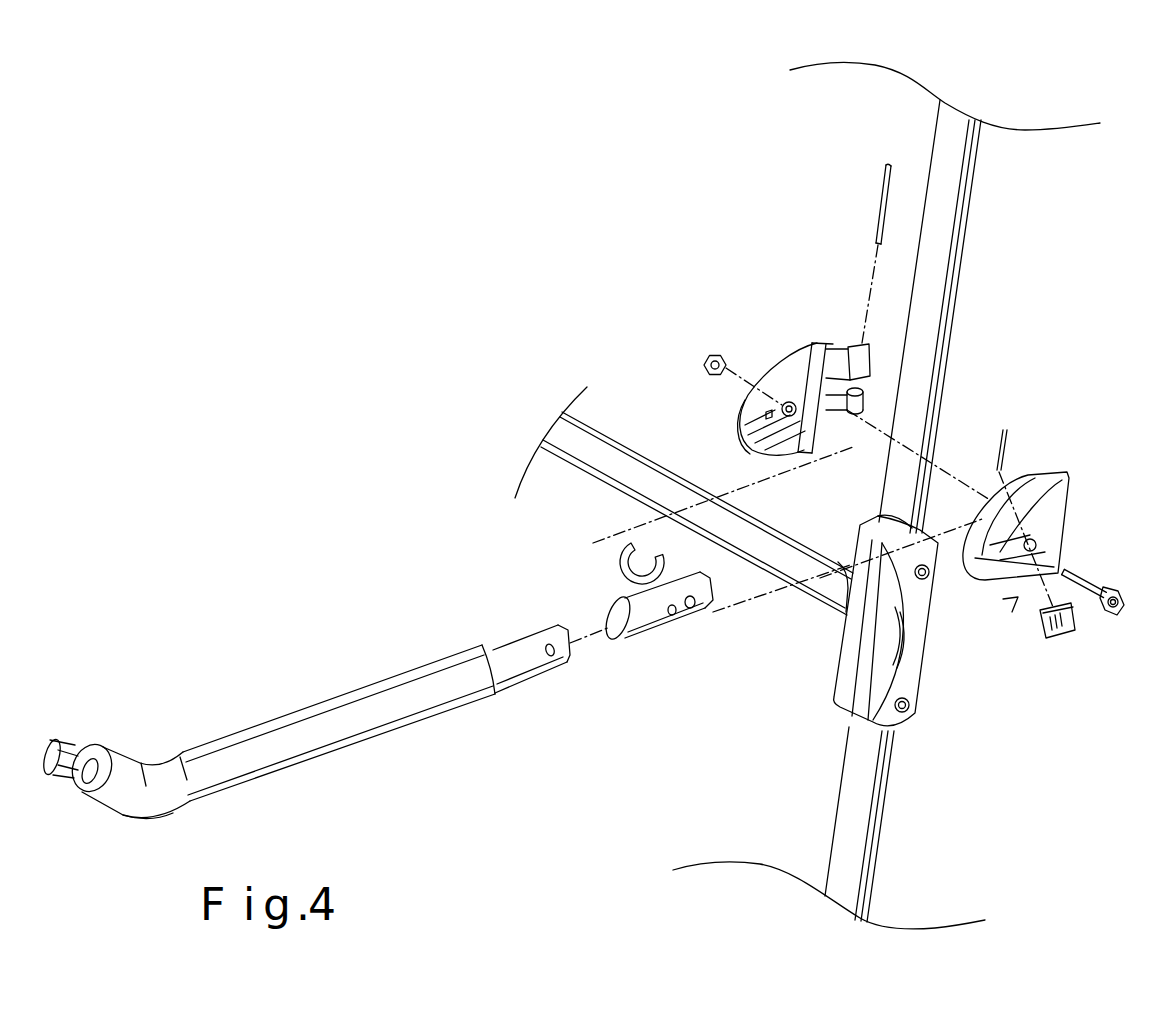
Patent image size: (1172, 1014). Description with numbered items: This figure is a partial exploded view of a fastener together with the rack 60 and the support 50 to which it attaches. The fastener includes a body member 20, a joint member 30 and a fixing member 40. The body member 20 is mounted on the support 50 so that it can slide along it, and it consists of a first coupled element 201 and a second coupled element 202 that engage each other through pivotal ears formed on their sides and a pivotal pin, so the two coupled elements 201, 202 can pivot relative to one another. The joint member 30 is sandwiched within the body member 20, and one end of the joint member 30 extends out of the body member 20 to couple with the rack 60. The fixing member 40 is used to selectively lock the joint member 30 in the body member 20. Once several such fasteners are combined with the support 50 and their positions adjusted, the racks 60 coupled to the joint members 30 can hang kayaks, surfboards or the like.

The body member 20 is at (925, 389).
The first coupled element 201 is at (898, 340).
The second coupled element 202 is at (1038, 432).
The joint member 30 is at (637, 698).
The fixing member 40 is at (1052, 706).
The support 50 is at (942, 246).
The rack 60 is at (307, 747).